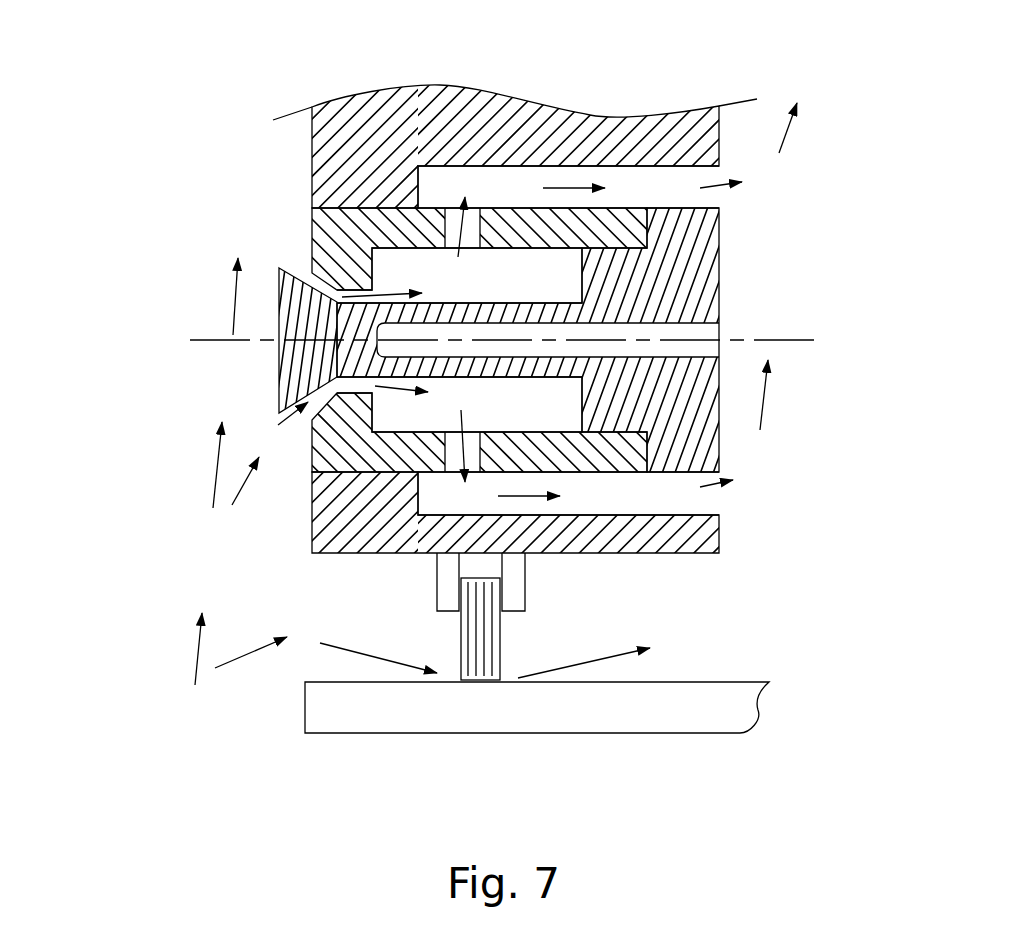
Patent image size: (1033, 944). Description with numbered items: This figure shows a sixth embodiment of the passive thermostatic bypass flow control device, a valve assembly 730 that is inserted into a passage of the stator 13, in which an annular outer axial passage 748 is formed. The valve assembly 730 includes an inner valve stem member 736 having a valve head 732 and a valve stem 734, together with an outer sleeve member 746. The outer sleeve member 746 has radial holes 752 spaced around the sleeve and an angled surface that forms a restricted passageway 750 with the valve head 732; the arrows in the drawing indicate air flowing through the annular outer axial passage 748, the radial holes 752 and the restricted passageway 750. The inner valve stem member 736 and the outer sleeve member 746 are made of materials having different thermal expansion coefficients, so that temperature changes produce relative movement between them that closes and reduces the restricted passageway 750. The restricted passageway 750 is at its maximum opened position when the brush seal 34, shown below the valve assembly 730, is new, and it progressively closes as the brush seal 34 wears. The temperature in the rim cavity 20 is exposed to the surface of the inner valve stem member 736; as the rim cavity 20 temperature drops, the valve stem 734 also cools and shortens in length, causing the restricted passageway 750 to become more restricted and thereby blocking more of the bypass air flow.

The valve assembly 730 is at (210, 125).
The stator 13 is at (408, 110).
The rim cavity 20 is at (896, 212).
The brush seal 34 is at (460, 645).
The valve head 732 is at (293, 366).
The valve stem 734 is at (493, 373).
The inner valve stem member 736 is at (690, 280).
The outer sleeve member 746 is at (328, 228).
The annular outer axial passage 748 is at (625, 182).
The restricted passageway 750 is at (317, 282).
The radial holes 752 is at (458, 258).